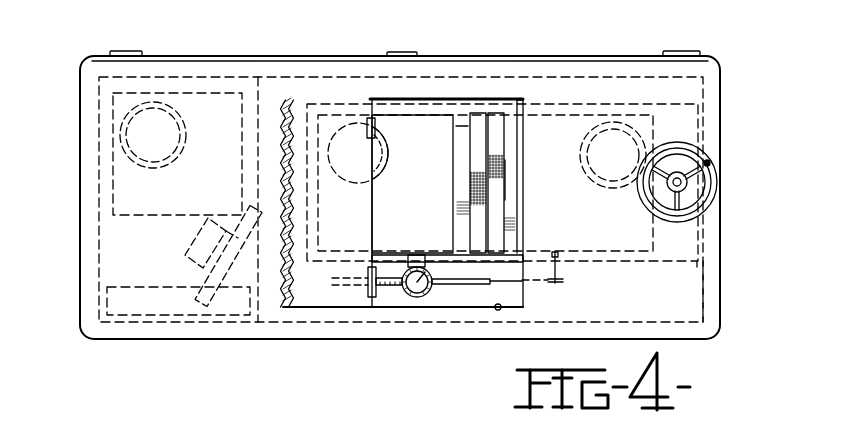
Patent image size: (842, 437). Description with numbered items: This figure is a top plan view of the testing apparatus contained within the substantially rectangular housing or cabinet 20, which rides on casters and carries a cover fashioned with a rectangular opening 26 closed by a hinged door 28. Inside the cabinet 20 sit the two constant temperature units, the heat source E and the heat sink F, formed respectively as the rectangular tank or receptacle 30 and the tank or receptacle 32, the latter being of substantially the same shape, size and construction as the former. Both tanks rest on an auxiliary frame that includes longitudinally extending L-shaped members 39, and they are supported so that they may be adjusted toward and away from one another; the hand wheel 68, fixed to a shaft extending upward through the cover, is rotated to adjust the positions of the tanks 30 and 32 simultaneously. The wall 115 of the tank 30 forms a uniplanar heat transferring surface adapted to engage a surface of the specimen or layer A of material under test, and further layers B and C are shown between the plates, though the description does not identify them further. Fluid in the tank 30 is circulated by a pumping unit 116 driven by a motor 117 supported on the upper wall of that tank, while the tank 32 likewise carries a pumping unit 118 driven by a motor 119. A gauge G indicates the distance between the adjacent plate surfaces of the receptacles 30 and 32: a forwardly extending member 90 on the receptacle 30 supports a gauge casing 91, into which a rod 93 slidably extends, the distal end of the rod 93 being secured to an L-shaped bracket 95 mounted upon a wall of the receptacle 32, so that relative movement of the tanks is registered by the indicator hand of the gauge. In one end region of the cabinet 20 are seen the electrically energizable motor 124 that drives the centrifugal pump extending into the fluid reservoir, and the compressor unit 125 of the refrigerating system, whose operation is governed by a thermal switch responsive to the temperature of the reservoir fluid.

The housing or cabinet 20 is at (718, 246).
The rectangular opening 26 is at (498, 310).
The hinged cover or door 28 is at (312, 300).
The tank or receptacle 30 is at (393, 120).
The tank or receptacle 32 is at (522, 140).
The L-shaped member 39 is at (510, 172).
The hand wheel 68 is at (688, 148).
The forwardly extending member 90 is at (427, 258).
The gauge casing 91 is at (398, 290).
The rod 93 is at (510, 282).
The L-shaped bracket 95 is at (405, 295).
The heat transferring surface 115 is at (462, 126).
The pumping unit 116 is at (376, 168).
The motor 117 is at (390, 160).
The pumping unit 118 is at (600, 140).
The motor 119 is at (587, 160).
The motor 124 is at (127, 115).
The compressor unit 125 is at (130, 142).
The specimen or layer of material A is at (476, 118).
The strip B is at (500, 118).
The element C is at (485, 225).
The heat source E is at (445, 200).
The heat sink F is at (513, 197).
The gauge G is at (422, 293).